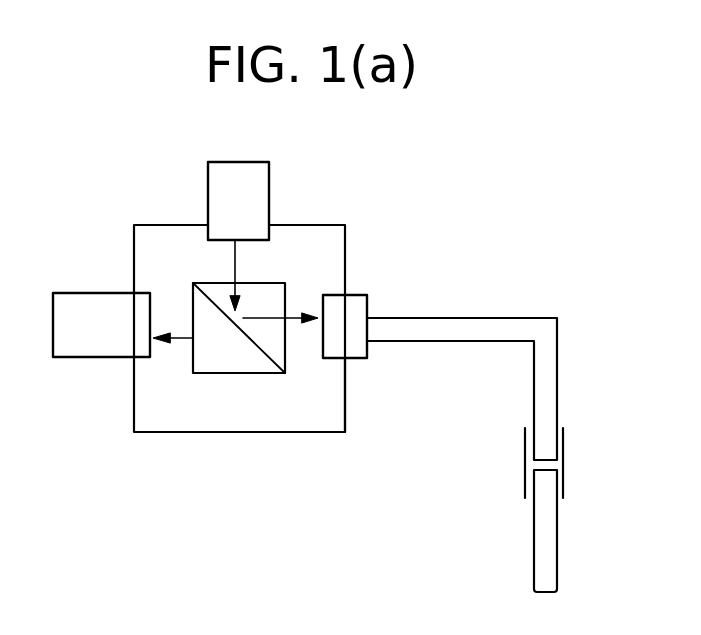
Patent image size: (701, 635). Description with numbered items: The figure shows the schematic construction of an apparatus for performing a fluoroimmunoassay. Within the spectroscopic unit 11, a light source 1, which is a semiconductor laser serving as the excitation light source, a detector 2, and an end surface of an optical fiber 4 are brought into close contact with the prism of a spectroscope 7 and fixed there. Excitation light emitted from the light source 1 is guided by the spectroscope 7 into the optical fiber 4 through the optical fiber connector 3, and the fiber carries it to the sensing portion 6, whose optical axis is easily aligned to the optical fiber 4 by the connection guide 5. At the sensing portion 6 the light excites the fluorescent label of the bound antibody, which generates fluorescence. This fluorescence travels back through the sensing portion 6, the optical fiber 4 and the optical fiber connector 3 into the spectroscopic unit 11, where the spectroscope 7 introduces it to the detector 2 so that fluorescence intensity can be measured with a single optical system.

The light source 1 is at (257, 186).
The detector 2 is at (78, 345).
The optical fiber connector 3 is at (348, 318).
The optical fiber 4 is at (543, 335).
The connection guide 5 is at (563, 452).
The sensing portion 6 is at (542, 550).
The spectroscope 7 is at (203, 374).
The spectroscopic unit 11 is at (240, 433).